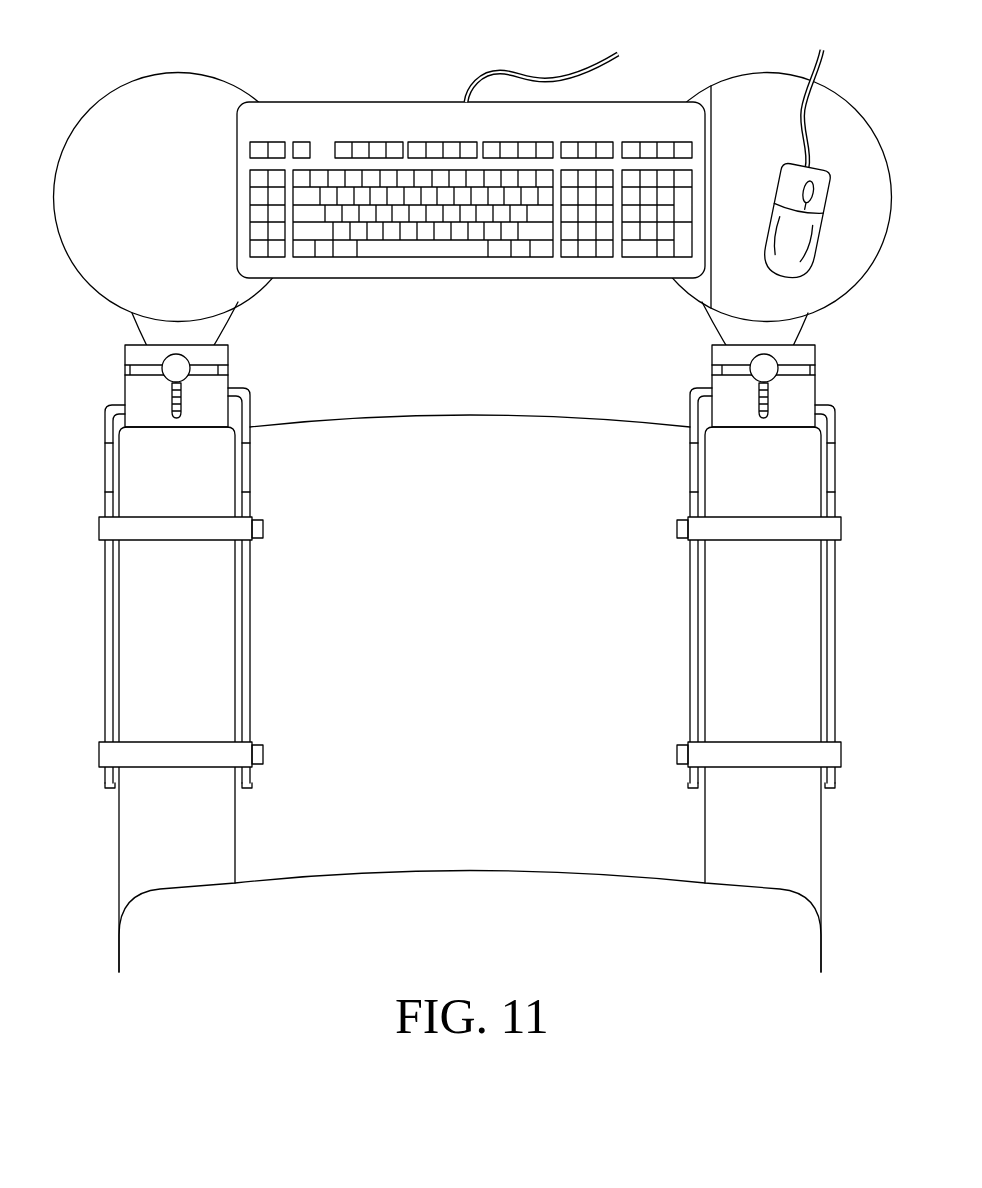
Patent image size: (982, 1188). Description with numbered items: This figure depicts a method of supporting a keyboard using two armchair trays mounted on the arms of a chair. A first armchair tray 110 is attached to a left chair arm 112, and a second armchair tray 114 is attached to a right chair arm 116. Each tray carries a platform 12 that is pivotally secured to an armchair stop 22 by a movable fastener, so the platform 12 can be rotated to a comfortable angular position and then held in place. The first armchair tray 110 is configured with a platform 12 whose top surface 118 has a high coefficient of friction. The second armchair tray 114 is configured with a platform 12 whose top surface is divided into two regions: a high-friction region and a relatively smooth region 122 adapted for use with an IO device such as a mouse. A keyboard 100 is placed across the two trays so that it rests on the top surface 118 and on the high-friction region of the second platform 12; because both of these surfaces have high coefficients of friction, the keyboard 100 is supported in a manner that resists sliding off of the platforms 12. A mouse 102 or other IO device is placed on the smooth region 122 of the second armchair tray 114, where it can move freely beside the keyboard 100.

The platform 12 is at (474, 195).
The top surface 118 is at (172, 87).
The smooth region 122 is at (771, 88).
The keyboard 100 is at (352, 105).
The mouse 102 is at (778, 192).
The armchair stop 22 is at (222, 355).
The first armchair tray 110 is at (153, 680).
The left chair arm 112 is at (132, 825).
The second armchair tray 114 is at (788, 680).
The right chair arm 116 is at (808, 825).